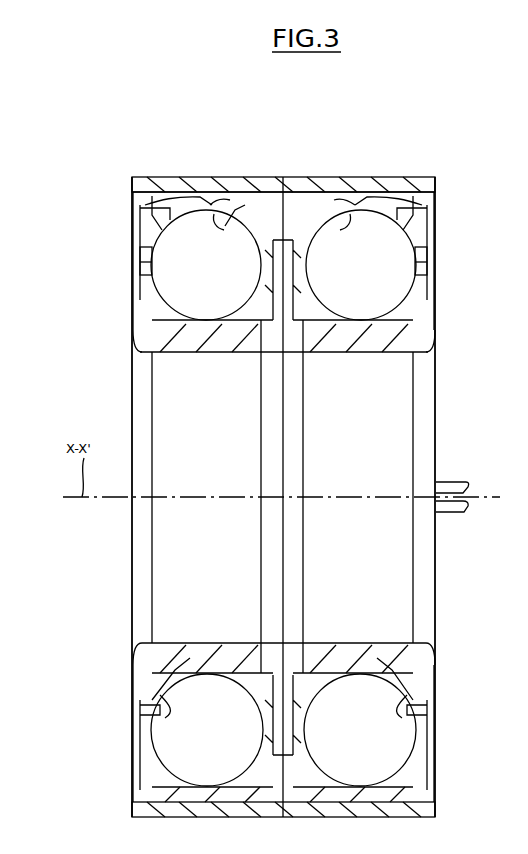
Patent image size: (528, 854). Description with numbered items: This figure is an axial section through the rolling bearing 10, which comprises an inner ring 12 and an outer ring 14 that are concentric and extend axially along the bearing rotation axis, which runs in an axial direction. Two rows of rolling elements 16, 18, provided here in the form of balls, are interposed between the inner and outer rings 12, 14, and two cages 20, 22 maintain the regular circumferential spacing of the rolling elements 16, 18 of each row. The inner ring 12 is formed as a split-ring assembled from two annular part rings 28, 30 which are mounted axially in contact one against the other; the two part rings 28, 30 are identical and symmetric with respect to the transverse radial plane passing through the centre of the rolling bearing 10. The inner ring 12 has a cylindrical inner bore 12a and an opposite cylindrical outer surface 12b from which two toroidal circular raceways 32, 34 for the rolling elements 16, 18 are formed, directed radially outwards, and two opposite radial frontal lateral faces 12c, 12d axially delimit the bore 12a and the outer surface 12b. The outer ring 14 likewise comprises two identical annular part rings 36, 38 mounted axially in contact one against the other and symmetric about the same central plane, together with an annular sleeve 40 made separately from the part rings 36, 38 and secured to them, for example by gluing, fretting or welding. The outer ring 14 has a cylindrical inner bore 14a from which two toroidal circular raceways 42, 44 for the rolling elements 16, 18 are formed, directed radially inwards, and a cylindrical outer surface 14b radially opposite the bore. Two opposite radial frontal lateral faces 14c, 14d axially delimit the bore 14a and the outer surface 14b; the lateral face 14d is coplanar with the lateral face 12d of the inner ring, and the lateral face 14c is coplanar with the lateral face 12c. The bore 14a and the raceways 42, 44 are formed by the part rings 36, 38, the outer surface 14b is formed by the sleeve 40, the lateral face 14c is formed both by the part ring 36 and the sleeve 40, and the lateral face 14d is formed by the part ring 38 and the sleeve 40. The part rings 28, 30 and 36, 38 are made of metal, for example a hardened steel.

The rolling bearing 10 is at (125, 310).
The inner ring 12 is at (130, 658).
The cylindrical inner bore 12a is at (222, 643).
The cylindrical outer surface 12b is at (352, 692).
The radial frontal lateral face 12c is at (130, 686).
The radial frontal lateral face 12d is at (436, 690).
The outer ring 14 is at (439, 175).
The cylindrical inner bore 14a is at (320, 236).
The cylindrical outer surface 14b is at (376, 192).
The radial frontal lateral face 14c is at (132, 185).
The radial frontal lateral face 14d is at (437, 195).
The rolling elements 16 is at (215, 272).
The rolling elements 18 is at (370, 272).
The cage 20 is at (140, 263).
The cage 22 is at (428, 263).
The annular part ring 28 is at (190, 660).
The annular part ring 30 is at (382, 662).
The toroidal circular raceway 32 is at (140, 713).
The toroidal circular raceway 34 is at (427, 713).
The annular part ring 36 is at (168, 205).
The annular part ring 38 is at (400, 205).
The annular sleeve 40 is at (240, 186).
The toroidal circular raceway 42 is at (218, 214).
The toroidal circular raceway 44 is at (348, 220).